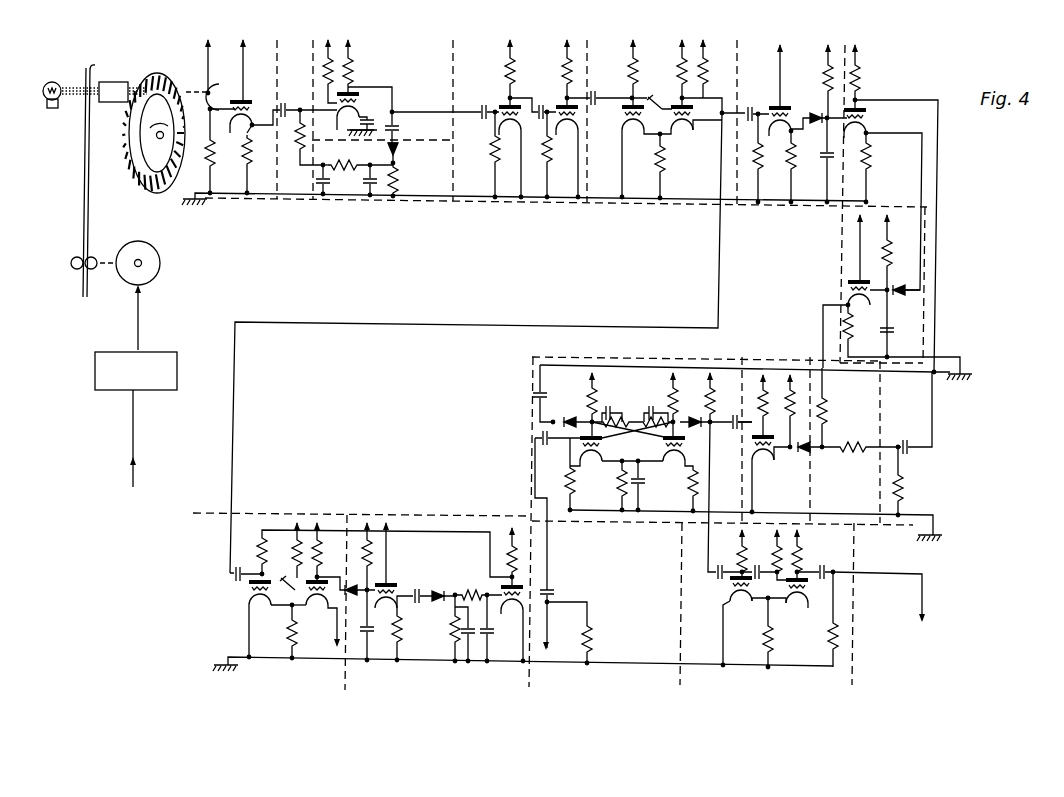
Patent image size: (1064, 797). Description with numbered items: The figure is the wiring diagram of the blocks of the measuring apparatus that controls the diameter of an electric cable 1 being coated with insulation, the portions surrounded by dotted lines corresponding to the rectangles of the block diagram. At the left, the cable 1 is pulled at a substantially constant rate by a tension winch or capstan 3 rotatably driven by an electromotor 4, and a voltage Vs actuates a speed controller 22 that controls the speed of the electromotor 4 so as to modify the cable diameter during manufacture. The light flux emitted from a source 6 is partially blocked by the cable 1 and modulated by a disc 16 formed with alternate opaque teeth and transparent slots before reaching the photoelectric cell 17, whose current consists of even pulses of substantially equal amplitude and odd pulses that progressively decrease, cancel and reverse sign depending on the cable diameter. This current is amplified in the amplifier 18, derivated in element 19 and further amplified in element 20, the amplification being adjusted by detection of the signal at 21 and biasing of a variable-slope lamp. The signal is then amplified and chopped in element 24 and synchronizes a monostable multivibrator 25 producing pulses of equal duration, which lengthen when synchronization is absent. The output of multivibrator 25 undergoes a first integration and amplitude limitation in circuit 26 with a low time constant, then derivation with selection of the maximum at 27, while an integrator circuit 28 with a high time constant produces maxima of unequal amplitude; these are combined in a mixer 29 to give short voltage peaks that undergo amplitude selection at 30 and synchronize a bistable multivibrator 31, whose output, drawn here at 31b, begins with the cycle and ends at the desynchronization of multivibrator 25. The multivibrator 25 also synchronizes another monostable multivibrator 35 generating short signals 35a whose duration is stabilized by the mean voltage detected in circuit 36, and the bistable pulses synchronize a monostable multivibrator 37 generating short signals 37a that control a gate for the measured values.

The electric cable 1 is at (91, 66).
The tension winch or capstan 3 is at (70, 262).
The electromotor 4 is at (149, 250).
The light source 6 is at (51, 82).
The disc 16 is at (141, 48).
The photoelectric cell 17 is at (222, 117).
The amplifier 18 is at (266, 117).
The derivating element 19 is at (313, 104).
The amplifier element 20 is at (409, 87).
The signal detection circuit 21 is at (357, 155).
The speed controller 22 is at (136, 419).
The amplifying and chopping element 24 is at (561, 119).
The monostable multivibrator 25 is at (662, 119).
The first integration circuit 26 is at (784, 124).
The derivation and maximum selection circuit 27 is at (874, 124).
The integrator circuit 28 is at (907, 224).
The mixer 29 is at (874, 442).
The amplitude selection circuit 30 is at (778, 382).
The bistable multivibrator 31 is at (642, 477).
The flip-flop output 31b is at (566, 627).
The monostable multivibrator 35 is at (355, 591).
The short duration signals 35a is at (331, 621).
The mean voltage detection circuit 36 is at (442, 592).
The monostable multivibrator 37 is at (779, 599).
The short duration signals 37a is at (847, 578).